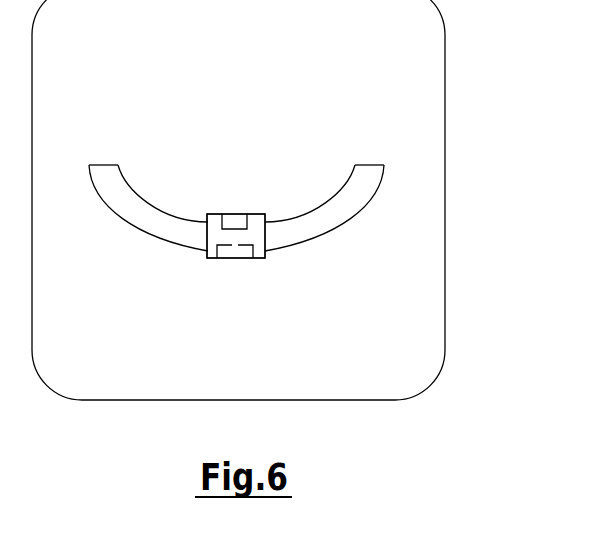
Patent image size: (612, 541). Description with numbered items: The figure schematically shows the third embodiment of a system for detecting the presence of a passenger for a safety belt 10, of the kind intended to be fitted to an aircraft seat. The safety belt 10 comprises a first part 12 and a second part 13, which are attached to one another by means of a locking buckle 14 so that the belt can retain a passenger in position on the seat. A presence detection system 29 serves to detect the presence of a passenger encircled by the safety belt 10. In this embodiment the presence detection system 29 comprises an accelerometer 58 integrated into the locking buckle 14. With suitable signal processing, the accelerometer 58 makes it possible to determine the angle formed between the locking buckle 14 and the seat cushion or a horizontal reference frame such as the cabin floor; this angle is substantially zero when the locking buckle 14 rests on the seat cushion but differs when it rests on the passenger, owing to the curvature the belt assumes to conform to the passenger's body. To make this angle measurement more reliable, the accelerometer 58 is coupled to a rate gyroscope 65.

The safety belt 10 is at (117, 105).
The first part 12 is at (152, 223).
The second part 13 is at (340, 207).
The locking buckle 14 is at (246, 258).
The presence detection system 29 is at (258, 202).
The accelerometer 58 is at (237, 222).
The rate gyroscope 65 is at (226, 257).